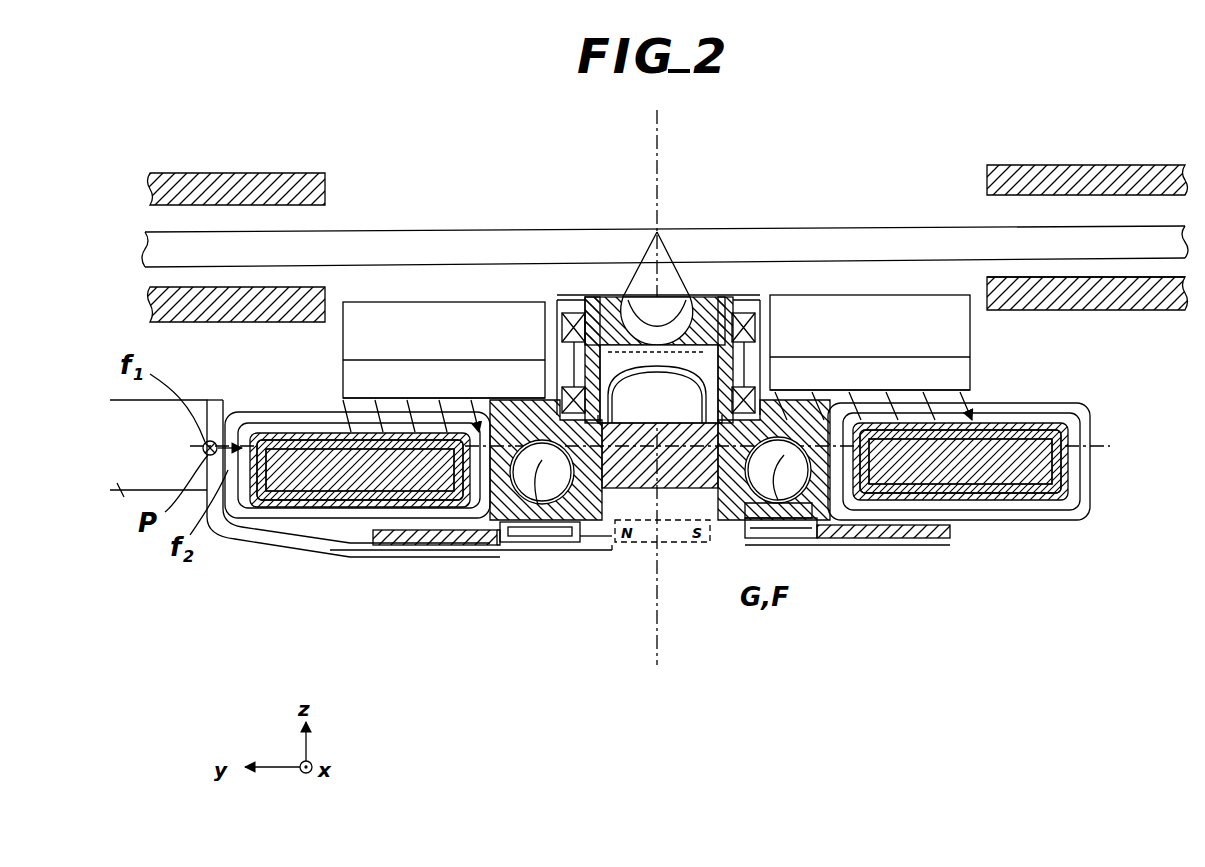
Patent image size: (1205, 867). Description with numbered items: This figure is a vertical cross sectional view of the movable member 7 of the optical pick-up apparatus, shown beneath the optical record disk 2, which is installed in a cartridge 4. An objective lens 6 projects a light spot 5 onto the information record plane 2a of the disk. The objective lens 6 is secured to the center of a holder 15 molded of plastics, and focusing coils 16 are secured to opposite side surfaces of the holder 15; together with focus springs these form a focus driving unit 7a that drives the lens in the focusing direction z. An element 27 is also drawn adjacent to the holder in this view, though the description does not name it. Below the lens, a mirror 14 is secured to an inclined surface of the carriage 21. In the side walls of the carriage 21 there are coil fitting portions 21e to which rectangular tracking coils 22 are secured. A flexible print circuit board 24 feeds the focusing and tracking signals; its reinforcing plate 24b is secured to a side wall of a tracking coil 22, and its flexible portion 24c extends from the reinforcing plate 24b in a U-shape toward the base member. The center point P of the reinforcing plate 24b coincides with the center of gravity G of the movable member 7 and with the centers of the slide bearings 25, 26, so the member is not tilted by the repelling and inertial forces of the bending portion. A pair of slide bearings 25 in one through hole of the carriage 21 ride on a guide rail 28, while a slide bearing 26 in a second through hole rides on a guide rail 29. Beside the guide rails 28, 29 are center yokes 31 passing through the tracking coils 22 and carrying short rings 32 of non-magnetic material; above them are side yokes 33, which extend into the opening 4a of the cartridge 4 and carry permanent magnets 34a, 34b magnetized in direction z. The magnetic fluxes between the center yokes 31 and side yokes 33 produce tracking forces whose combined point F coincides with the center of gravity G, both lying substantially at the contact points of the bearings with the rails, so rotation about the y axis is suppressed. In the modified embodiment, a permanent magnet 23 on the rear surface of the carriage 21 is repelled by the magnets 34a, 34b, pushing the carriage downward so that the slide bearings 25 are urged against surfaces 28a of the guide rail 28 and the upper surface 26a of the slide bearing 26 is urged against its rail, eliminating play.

The optical record disk 2 is at (866, 230).
The information record plane 2a is at (714, 229).
The cartridge 4 is at (1080, 165).
The opening 4a is at (975, 290).
The light spot 5 is at (666, 300).
The objective lens 6 is at (620, 297).
The movable member 7 is at (740, 563).
The focus driving unit 7a is at (592, 298).
The mirror 14 is at (596, 500).
The holder 15 is at (600, 292).
The focusing coils 16 is at (555, 325).
The carriage 21 is at (700, 498).
The coil fitting portions 21e is at (396, 546).
The tracking coils 22 is at (305, 522).
The permanent magnet 23 is at (640, 495).
The flexible print circuit board 24 is at (290, 548).
The reinforcing plate 24b is at (220, 400).
The flexible portion 24c is at (130, 490).
The slide bearings 25 is at (520, 530).
The slide bearing 26 is at (782, 505).
The upper surface 26a is at (858, 538).
The shaft column 27 is at (760, 300).
The guide rail 28 is at (544, 500).
The surfaces 28a is at (478, 532).
The guide rail 29 is at (786, 502).
The center yokes 31 is at (352, 505).
The short rings 32 is at (248, 524).
The side yokes 33 is at (383, 308).
The permanent magnet 34a is at (348, 374).
The permanent magnet 34b is at (958, 374).